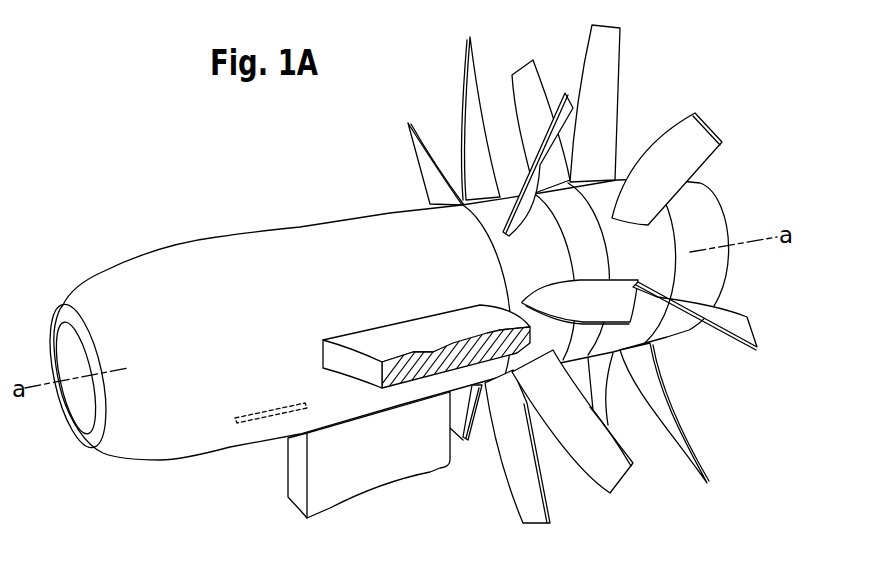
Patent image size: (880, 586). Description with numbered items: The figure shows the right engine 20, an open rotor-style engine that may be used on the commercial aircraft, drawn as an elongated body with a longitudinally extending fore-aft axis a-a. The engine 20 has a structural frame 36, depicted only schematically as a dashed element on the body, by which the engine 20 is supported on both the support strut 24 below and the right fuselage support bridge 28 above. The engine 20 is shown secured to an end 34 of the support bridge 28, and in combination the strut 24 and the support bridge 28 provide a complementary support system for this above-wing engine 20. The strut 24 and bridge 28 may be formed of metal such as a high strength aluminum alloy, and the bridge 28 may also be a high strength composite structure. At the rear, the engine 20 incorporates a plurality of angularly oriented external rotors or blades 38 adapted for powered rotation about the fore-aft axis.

The right engine 20 is at (217, 260).
The support strut 24 is at (386, 461).
The right fuselage support bridge 28 is at (404, 352).
The end of the support bridge 34 is at (335, 357).
The structural frame 36 is at (262, 420).
The external rotors or blades 38 is at (603, 63).